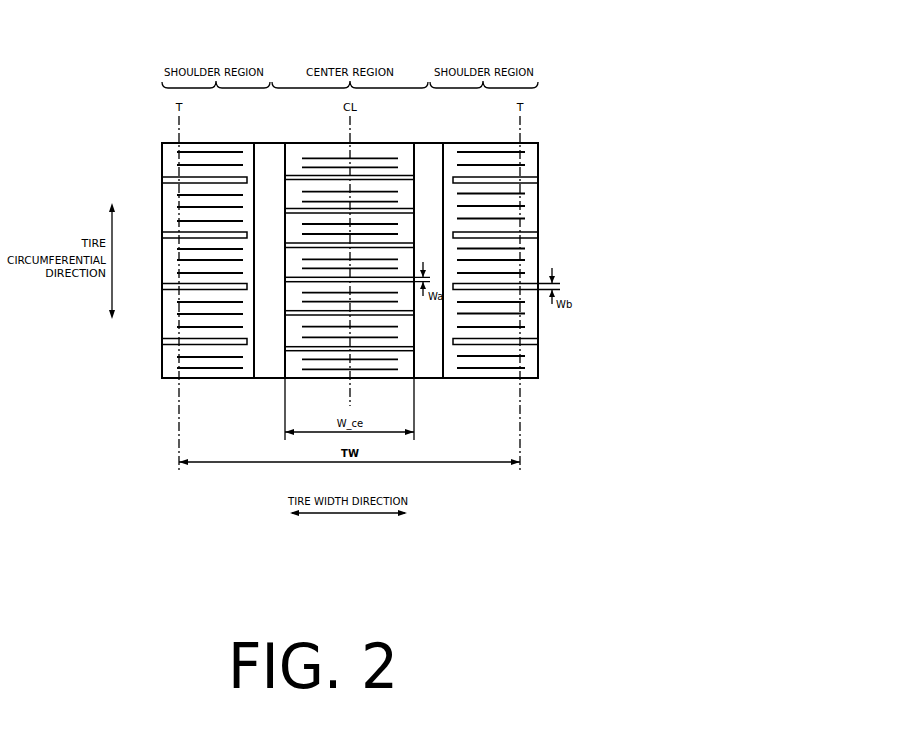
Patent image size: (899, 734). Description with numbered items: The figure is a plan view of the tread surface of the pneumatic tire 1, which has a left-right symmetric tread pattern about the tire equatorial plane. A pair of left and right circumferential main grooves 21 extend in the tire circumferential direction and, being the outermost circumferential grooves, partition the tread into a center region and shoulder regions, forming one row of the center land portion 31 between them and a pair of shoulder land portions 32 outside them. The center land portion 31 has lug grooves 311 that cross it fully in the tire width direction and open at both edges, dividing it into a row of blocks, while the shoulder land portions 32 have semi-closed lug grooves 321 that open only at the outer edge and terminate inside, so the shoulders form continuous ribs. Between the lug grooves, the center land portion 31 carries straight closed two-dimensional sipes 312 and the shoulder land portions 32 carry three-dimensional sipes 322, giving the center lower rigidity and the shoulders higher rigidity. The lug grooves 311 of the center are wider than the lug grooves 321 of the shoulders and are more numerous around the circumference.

The pneumatic tire 1 is at (530, 52).
The circumferential main groove 21 is at (268, 150).
The center land portion 31 is at (378, 141).
The shoulder land portion 32 is at (224, 141).
The lug groove 311 is at (410, 178).
The sipe 312 is at (394, 192).
The lug groove 321 is at (168, 179).
The sipe 322 is at (177, 195).